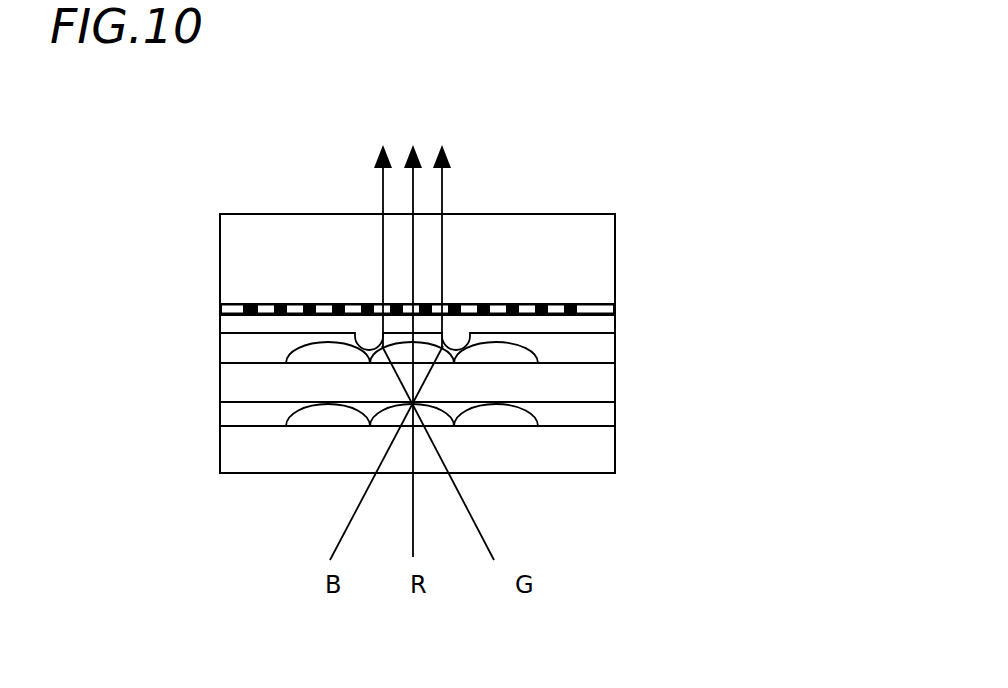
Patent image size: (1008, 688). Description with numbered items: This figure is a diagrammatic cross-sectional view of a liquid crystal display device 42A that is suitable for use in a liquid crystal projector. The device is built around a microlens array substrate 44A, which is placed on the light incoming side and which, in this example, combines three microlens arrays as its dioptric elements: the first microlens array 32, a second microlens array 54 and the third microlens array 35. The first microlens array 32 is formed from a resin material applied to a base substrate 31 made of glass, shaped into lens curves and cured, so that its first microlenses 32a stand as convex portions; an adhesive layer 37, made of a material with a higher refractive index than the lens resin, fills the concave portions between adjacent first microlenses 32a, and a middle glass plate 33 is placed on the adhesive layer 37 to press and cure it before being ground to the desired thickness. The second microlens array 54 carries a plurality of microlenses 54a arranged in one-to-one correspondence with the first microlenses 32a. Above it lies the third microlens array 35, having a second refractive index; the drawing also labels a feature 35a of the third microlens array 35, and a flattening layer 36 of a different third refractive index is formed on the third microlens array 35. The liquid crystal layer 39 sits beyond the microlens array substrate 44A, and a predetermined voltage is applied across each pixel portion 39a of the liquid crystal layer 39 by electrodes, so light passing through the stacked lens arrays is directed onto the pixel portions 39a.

The liquid crystal display device 42A is at (508, 105).
The microlens array substrate 44A is at (216, 315).
The liquid crystal layer 39 is at (519, 286).
The pixel portion 39a is at (615, 312).
The flattening layer 36 is at (593, 328).
The third microlens array 35 is at (573, 350).
The opening 35a is at (456, 347).
The second microlens array 54 is at (548, 351).
The microlens 54a is at (525, 351).
The middle glass plate 33 is at (593, 388).
The adhesive layer 37 is at (597, 417).
The first microlens array 32 is at (588, 434).
The first microlens 32a is at (512, 423).
The base substrate 31 is at (598, 447).